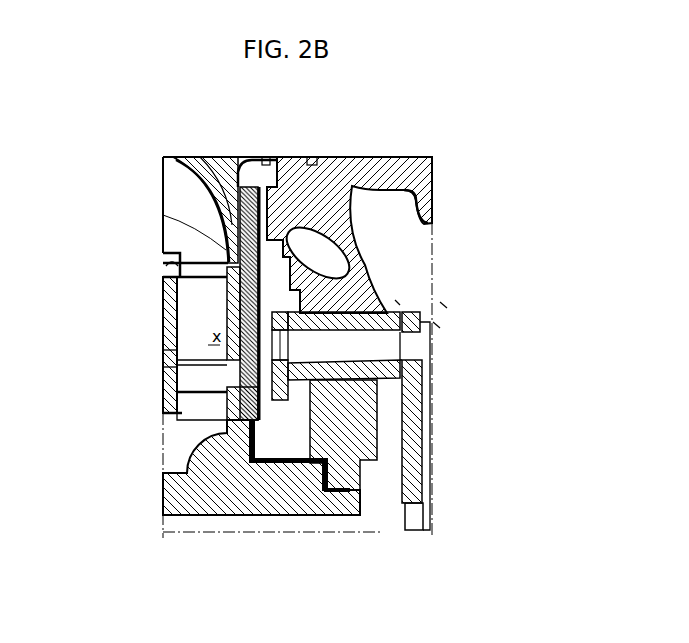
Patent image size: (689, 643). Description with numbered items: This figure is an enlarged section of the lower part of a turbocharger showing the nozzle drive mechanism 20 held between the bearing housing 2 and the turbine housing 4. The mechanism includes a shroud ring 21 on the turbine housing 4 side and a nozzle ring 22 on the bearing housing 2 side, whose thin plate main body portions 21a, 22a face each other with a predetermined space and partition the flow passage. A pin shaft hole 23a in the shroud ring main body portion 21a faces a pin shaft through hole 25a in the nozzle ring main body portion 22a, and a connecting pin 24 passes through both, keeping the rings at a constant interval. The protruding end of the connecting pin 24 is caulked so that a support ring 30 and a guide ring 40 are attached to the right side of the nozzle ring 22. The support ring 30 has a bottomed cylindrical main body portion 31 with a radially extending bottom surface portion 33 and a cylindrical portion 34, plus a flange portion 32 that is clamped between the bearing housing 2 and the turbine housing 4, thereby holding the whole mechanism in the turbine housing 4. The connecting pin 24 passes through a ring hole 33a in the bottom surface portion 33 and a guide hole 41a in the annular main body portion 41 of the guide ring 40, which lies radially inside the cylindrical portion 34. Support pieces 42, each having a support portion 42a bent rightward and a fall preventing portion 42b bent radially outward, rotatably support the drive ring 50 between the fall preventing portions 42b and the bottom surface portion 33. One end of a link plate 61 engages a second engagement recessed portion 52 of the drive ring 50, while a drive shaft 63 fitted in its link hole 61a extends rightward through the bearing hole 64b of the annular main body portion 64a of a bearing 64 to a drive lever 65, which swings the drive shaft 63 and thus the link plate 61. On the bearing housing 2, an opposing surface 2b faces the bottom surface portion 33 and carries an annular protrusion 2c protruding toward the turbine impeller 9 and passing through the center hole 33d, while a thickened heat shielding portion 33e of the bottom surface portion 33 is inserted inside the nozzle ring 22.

The nozzle drive mechanism 20 is at (96, 131).
The bearing housing 2 is at (395, 515).
The opposing surface 2b is at (168, 208).
The annular protrusion 2c is at (230, 215).
The turbine impeller 9 is at (173, 197).
The center hole 33d is at (215, 200).
The heat shielding portion 33e is at (266, 165).
The support ring 30 is at (267, 268).
The guide ring 40 is at (244, 300).
The main body portion 41 is at (232, 328).
The guide hole 41a is at (175, 360).
The pin shaft hole 23a is at (168, 365).
The shroud ring 21 is at (168, 395).
The main body portion 21a is at (180, 418).
The nozzle ring 22 is at (180, 265).
The main body portion 22a is at (172, 272).
The connecting pin 24 is at (232, 412).
The pin shaft through hole 25a is at (245, 430).
The ring hole 33a is at (235, 445).
The link plate 61 is at (320, 230).
The link hole 61a is at (343, 250).
The drive shaft 63 is at (428, 178).
The bearing 64 is at (437, 325).
The main body portion 64a is at (398, 302).
The bearing hole 64b is at (445, 305).
The support piece 42 is at (405, 343).
The support portion 42a is at (437, 332).
The fall preventing portion 42b is at (403, 380).
The main body portion 31 is at (407, 400).
The cylindrical portion 34 is at (407, 425).
The drive lever 65 is at (423, 452).
The turbine housing 4 is at (363, 480).
The flange portion 32 is at (335, 480).
The second engagement recessed portion 52 is at (300, 465).
The drive ring 50 is at (283, 462).
The bottom surface portion 33 is at (215, 470).